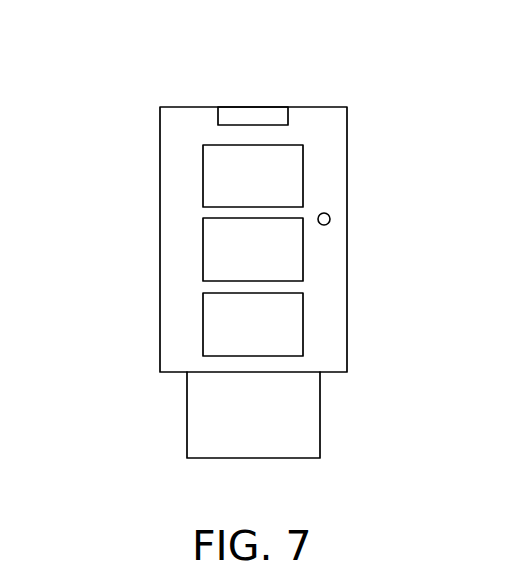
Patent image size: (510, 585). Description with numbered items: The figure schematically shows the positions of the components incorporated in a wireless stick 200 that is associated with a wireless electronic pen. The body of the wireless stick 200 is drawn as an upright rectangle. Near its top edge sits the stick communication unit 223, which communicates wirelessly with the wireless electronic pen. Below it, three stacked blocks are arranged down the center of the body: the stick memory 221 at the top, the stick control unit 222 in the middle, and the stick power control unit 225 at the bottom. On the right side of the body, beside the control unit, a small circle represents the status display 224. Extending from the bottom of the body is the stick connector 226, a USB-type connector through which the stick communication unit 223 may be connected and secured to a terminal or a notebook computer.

The wireless stick 200 is at (347, 120).
The stick memory 221 is at (203, 178).
The stick control unit 222 is at (203, 253).
The stick communication unit 223 is at (252, 115).
The status display 224 is at (330, 218).
The stick power control unit 225 is at (203, 326).
The stick connector 226 is at (300, 418).